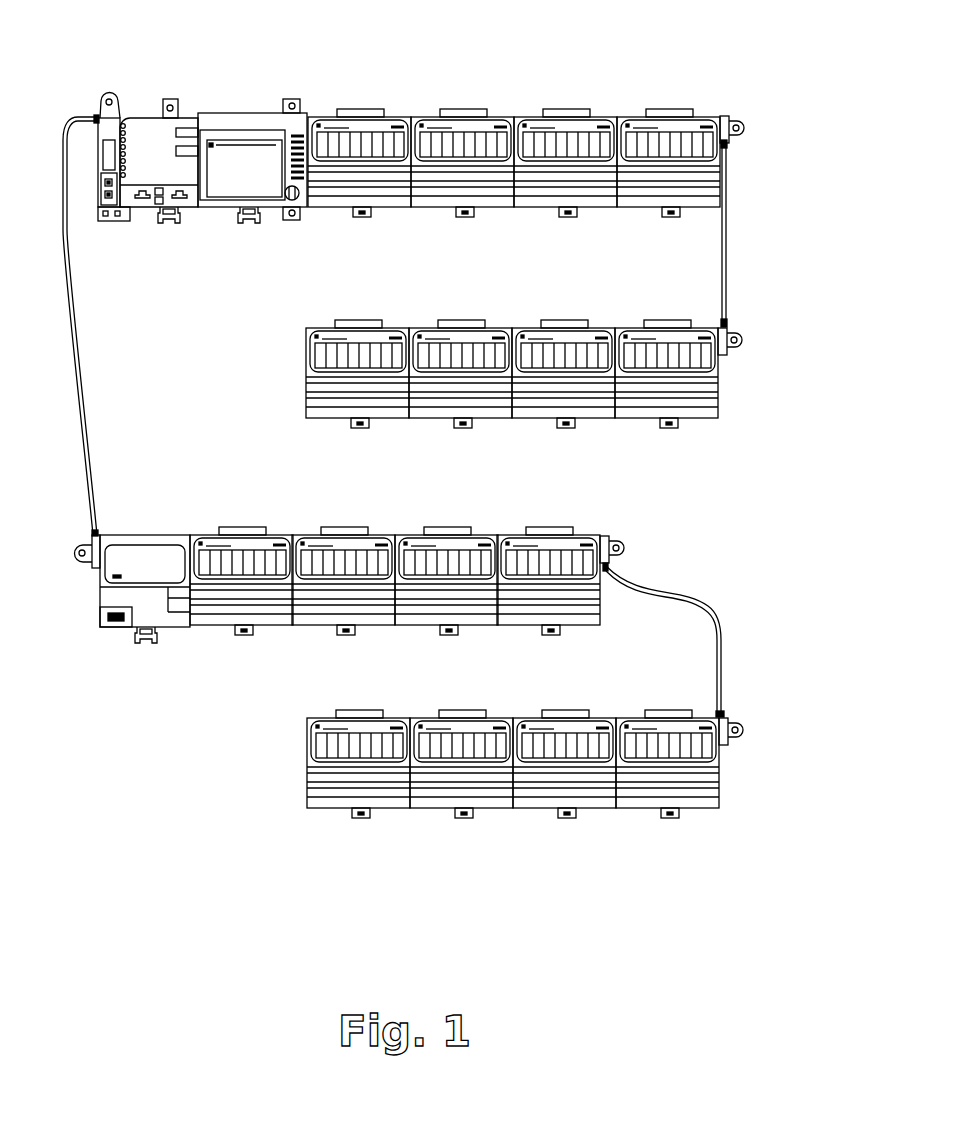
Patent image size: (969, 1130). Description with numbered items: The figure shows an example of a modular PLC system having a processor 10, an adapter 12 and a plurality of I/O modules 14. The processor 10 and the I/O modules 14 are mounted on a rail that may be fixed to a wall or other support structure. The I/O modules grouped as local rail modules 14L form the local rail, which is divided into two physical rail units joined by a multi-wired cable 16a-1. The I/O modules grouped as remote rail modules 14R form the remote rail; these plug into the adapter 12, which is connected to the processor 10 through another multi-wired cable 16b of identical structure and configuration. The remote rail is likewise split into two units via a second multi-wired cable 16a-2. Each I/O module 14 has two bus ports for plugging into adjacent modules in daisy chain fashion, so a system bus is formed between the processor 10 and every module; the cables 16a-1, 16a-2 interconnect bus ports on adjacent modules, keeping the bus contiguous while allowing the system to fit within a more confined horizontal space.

The processor 10 is at (222, 113).
The adapter 12 is at (163, 627).
The I/O modules 14 is at (478, 808).
The local rail I/O modules 14L is at (762, 113).
The remote rail I/O modules 14R is at (760, 515).
The multi-wired cable 16a-1 is at (727, 215).
The second multi-wired cable 16a-2 is at (672, 590).
The multi-wired cable 16b is at (73, 367).